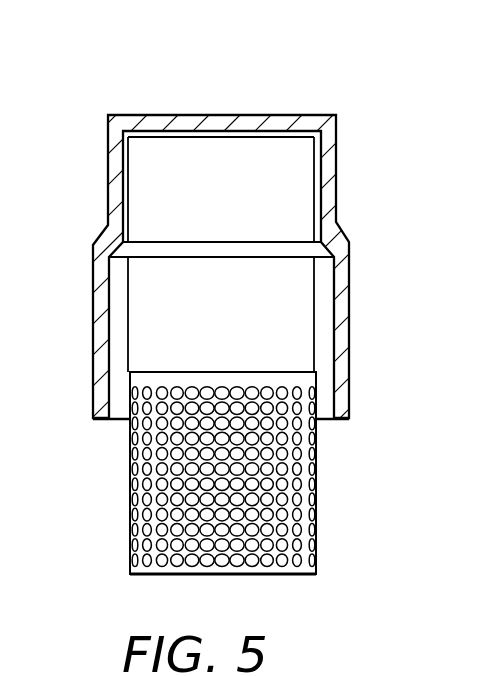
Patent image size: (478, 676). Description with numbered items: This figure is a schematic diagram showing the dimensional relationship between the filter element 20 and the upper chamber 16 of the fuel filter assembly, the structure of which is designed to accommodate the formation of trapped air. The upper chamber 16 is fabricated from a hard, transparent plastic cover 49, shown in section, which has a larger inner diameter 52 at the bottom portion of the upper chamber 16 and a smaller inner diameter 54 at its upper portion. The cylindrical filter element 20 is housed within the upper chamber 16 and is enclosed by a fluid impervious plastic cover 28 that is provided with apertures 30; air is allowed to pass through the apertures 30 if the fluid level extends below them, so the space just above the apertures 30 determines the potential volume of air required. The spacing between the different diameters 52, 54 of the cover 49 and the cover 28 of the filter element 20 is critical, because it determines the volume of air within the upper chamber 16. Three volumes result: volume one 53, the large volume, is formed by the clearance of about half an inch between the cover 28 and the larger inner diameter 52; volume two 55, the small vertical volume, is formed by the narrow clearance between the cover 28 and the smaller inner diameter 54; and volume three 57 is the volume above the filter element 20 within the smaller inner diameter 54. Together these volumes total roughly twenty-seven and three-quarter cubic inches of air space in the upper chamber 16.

The upper filter chamber 16 is at (355, 222).
The filter element 20 is at (302, 566).
The fluid impervious cover 28 is at (131, 566).
The apertures 30 is at (297, 483).
The cover 49 is at (350, 383).
The larger inner diameter 52 is at (337, 318).
The volume 1 53 is at (112, 302).
The smaller inner diameter 54 is at (312, 167).
The volume 2 55 is at (123, 190).
The volume 3 57 is at (143, 131).